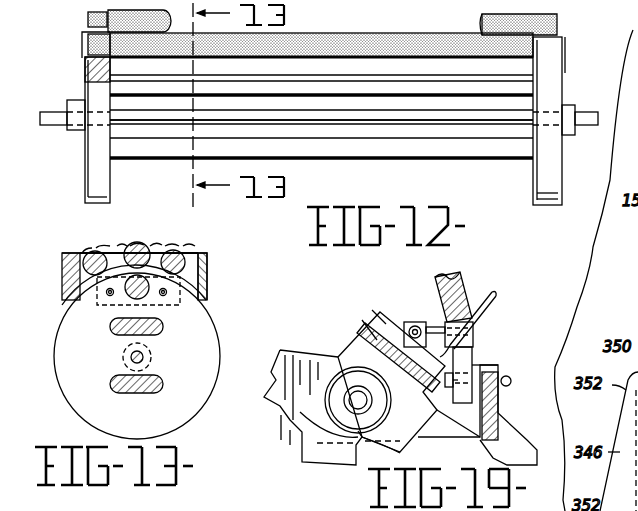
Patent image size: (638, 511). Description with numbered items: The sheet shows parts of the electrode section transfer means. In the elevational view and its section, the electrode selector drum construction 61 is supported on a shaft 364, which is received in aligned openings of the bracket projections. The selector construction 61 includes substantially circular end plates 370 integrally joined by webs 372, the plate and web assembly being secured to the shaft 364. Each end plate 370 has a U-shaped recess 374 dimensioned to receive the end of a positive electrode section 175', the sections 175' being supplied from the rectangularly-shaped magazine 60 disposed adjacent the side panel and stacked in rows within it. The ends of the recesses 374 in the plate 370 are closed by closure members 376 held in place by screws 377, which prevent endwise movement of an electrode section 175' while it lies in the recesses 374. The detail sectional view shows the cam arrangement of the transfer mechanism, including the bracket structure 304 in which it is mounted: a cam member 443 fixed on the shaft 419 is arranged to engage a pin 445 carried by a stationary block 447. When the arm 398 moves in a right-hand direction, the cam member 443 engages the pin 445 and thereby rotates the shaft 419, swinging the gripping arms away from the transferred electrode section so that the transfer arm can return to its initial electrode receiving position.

In FIG. 12, the electrode selector drum construction 61 is at (346, 163).
In FIG. 12, the end plate 370 is at (90, 157).
In FIG. 13, the end plate 370 is at (200, 324).
In FIG. 12, the web 372 is at (470, 88).
In FIG. 13, the web 372 is at (157, 375).
In FIG. 12, the U-shaped recess 374 is at (82, 34).
In FIG. 13, the U-shaped recess 374 is at (64, 309).
In FIG. 12, the closure member 376 is at (85, 70).
In FIG. 12, the screw 377 is at (80, 45).
In FIG. 12, the positive electrode section 175' is at (482, 23).
In FIG. 13, the positive electrode section 175' is at (106, 285).
In FIG. 12, the shaft 364 is at (590, 115).
In FIG. 13, the shaft 364 is at (131, 358).
In FIG. 13, the magazine 60 is at (210, 271).
In FIG. 19, the bracket 304 is at (296, 425).
In FIG. 19, the arm 398 is at (453, 270).
In FIG. 19, the shaft 419 is at (417, 326).
In FIG. 19, the cam member 443 is at (406, 325).
In FIG. 19, the pin 445 is at (462, 300).
In FIG. 19, the stationary block 447 is at (474, 347).